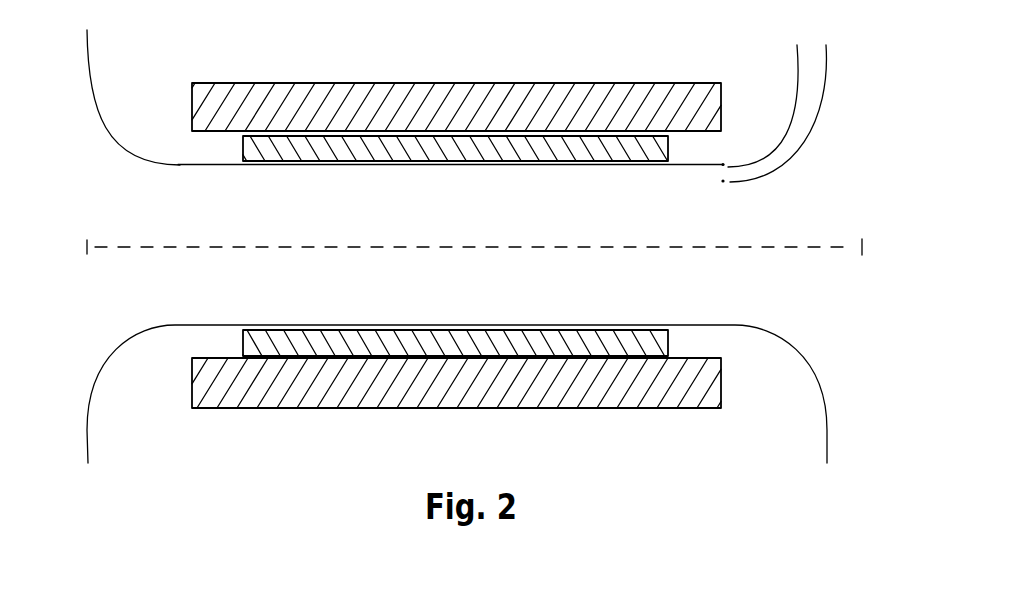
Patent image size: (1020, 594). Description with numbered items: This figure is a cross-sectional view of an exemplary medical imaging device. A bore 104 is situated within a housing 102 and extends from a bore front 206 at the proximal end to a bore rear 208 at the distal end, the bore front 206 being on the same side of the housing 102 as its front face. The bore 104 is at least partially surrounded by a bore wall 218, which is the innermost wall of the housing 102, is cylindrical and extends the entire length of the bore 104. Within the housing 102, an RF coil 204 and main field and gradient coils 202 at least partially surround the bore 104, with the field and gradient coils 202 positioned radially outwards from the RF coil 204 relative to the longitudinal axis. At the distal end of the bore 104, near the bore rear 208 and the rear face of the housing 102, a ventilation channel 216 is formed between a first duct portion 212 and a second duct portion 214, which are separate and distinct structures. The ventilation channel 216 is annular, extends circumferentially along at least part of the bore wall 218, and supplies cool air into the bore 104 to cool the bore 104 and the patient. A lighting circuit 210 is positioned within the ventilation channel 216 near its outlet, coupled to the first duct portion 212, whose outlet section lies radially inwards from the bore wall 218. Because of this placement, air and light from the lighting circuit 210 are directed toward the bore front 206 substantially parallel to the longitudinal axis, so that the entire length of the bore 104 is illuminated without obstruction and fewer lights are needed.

The housing 102 is at (121, 73).
The bore 104 is at (459, 291).
The main field and gradient coils 202 is at (213, 83).
The RF coil 204 is at (243, 143).
The bore front 206 is at (55, 213).
The bore rear 208 is at (936, 215).
The lighting circuit 210 is at (723, 183).
The first duct portion 212 is at (826, 76).
The second duct portion 214 is at (800, 83).
The ventilation channel 216 is at (783, 152).
The bore wall 218 is at (656, 166).